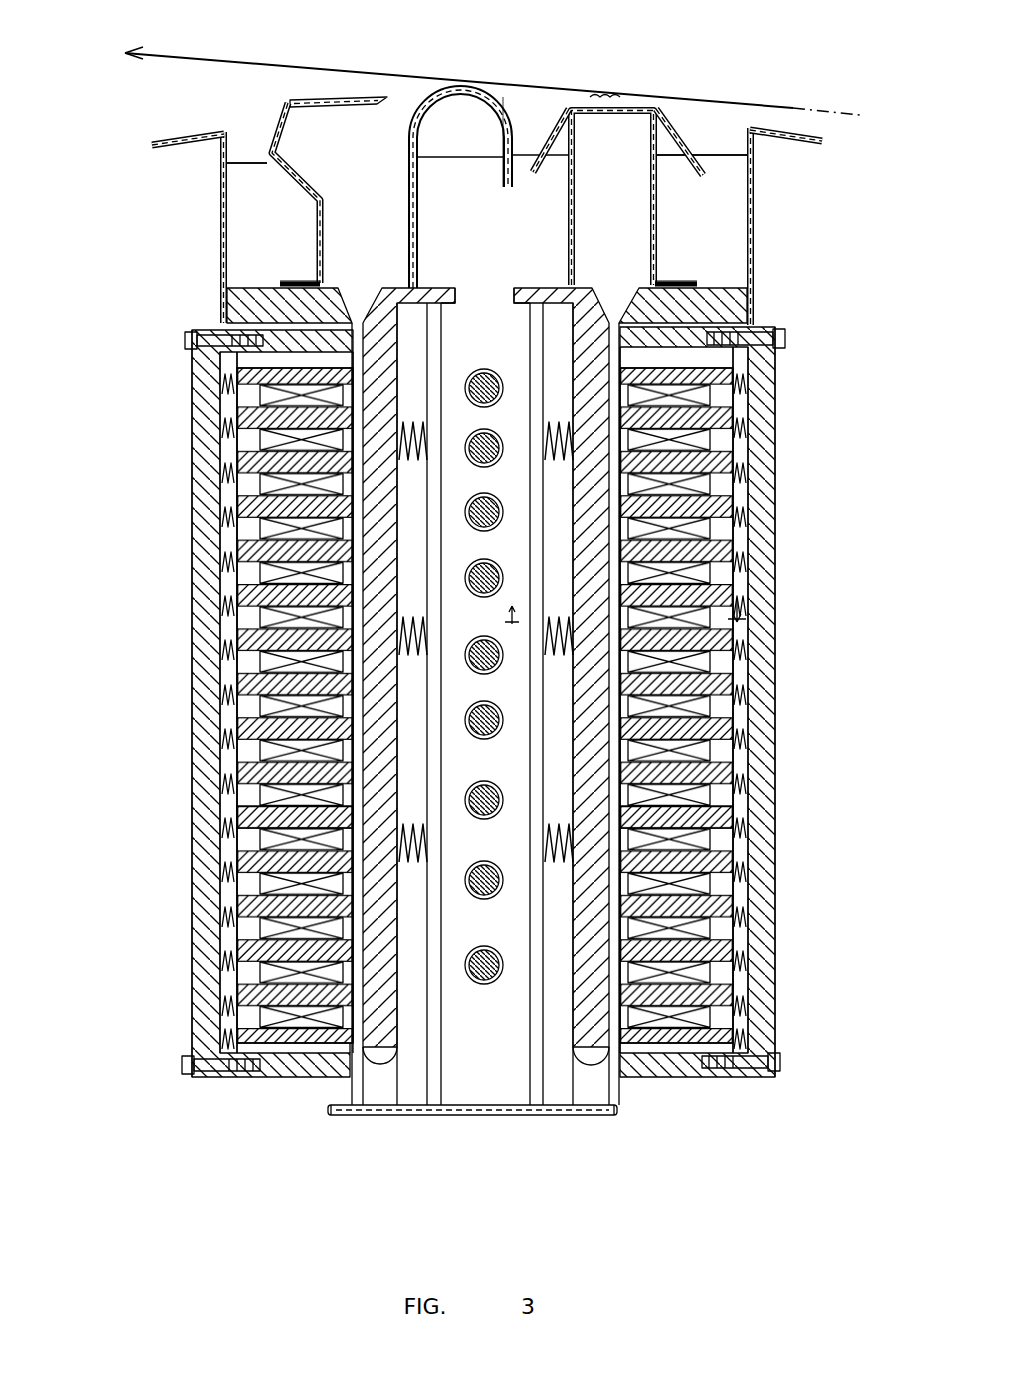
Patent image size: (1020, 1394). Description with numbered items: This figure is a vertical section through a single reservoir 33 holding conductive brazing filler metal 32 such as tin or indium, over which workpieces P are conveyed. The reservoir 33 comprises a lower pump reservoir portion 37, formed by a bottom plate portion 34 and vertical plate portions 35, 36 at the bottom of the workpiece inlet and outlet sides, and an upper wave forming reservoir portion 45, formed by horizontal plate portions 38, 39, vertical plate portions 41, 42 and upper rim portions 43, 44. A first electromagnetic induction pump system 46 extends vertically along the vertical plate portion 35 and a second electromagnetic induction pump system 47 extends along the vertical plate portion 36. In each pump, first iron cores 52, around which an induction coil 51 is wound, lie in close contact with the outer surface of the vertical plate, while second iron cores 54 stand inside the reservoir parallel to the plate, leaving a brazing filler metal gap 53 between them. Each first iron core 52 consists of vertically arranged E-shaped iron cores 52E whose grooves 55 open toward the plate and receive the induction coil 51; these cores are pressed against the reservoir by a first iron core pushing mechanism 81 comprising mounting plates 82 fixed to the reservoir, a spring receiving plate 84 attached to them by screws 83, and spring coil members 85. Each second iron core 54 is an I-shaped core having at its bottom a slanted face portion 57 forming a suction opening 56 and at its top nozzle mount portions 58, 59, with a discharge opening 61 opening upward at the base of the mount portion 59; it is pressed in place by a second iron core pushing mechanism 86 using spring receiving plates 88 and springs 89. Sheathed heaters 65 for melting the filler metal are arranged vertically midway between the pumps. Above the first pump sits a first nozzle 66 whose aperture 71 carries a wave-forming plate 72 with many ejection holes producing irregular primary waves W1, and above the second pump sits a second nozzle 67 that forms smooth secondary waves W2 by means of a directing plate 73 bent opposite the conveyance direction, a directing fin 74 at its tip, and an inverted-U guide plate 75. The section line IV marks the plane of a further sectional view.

The workpiece P is at (173, 52).
The conductive brazing filler metal 32 is at (713, 135).
The reservoir 33 is at (755, 237).
The bottom plate portion 34 is at (467, 1113).
The vertical plate portion 35 is at (620, 1100).
The vertical plate portion 36 is at (347, 1088).
The pump reservoir portion 37 is at (505, 1085).
The horizontal plate portion 38 is at (717, 320).
The horizontal plate portion 39 is at (253, 323).
The vertical plate portion 41 is at (755, 265).
The vertical plate portion 42 is at (220, 213).
The upper rim portion 43 is at (822, 138).
The upper rim portion 44 is at (188, 132).
The wave forming reservoir portion 45 is at (713, 230).
The first electromagnetic induction pump system 46 is at (737, 510).
The second electromagnetic induction pump system 47 is at (215, 520).
The induction coil 51 is at (263, 538).
The first iron core 52 is at (253, 553).
The E-shaped iron core 52E is at (242, 835).
The brazing filler metal gap 53 is at (353, 573).
The second iron core 54 is at (397, 585).
The groove 55 is at (350, 528).
The suction opening 56 is at (360, 1057).
The slanted face portion 57 is at (373, 1047).
The nozzle mount portion 58 is at (452, 306).
The nozzle mount portion 59 is at (247, 285).
The discharge opening 61 is at (358, 300).
The heater 65 is at (493, 433).
The first nozzle 66 is at (648, 156).
The second nozzle 67 is at (305, 150).
The aperture 71 is at (613, 133).
The wave-forming plate 72 is at (660, 147).
The directing plate 73 is at (280, 120).
The directing fin 74 is at (347, 97).
The guide plate 75 is at (467, 84).
The first iron core pushing mechanism 81 is at (210, 850).
The mounting plate 82 is at (240, 352).
The screw 83 is at (190, 340).
The spring receiving plate 84 is at (228, 870).
The spring coil member 85 is at (230, 935).
The second iron core pushing mechanism 86 is at (412, 812).
The spring receiving plate 88 is at (433, 877).
The spring 89 is at (553, 810).
The primary wave W1 is at (590, 97).
The secondary wave W2 is at (500, 100).
The section line IV is at (641, 614).